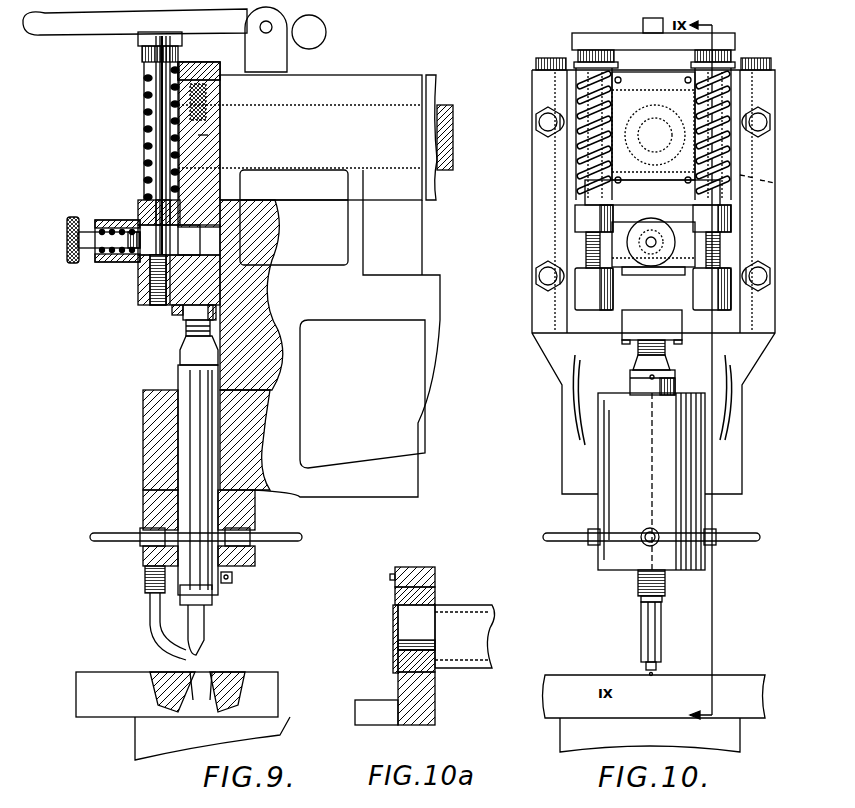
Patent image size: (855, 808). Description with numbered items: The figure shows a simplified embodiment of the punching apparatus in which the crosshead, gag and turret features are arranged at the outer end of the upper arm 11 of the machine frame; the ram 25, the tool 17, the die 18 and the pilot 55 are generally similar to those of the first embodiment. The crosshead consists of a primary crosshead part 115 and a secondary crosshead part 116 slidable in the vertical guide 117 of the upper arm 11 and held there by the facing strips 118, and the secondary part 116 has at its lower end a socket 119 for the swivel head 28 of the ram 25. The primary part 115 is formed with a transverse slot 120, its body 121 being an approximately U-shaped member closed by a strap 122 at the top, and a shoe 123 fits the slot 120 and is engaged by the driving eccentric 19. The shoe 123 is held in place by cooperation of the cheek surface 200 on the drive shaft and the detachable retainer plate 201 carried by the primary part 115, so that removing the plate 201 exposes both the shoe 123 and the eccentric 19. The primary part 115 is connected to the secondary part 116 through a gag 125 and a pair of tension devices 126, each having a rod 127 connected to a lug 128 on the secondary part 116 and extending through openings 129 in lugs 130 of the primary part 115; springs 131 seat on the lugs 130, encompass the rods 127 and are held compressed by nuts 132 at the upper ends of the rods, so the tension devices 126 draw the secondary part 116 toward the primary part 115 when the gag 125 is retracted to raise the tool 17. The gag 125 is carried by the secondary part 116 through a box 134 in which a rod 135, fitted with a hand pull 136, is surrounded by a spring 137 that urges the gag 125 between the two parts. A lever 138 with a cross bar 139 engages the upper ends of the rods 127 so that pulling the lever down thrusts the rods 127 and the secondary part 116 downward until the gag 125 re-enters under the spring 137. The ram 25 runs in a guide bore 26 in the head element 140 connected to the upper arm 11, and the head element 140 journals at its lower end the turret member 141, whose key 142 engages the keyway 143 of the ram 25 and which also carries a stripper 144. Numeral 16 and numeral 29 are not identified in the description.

In FIG. 9, the upper arm 11 is at (393, 296).
In FIG. 10, the upper arm 11 is at (743, 437).
In FIG. 9, the guide block 16 is at (443, 161).
In FIG. 9, the tool 17 is at (201, 630).
In FIG. 9, the die 18 is at (181, 672).
In FIG. 10A, the driving eccentric 19 is at (421, 630).
In FIG. 10, the driving eccentric 19 is at (651, 116).
In FIG. 9, the ram 25 is at (181, 373).
In FIG. 10, the ram 25 is at (676, 379).
In FIG. 9, the guide bore 26 is at (221, 400).
In FIG. 9, the swivel head 28 is at (221, 321).
In FIG. 9, the coupling 29 is at (187, 331).
In FIG. 9, the pilot 55 is at (206, 672).
In FIG. 9, the primary crosshead part 115 is at (216, 200).
In FIG. 10A, the primary crosshead part 115 is at (426, 716).
In FIG. 9, the secondary crosshead part 116 is at (241, 300).
In FIG. 9, the vertical guide 117 is at (216, 211).
In FIG. 10, the vertical guide 117 is at (761, 189).
In FIG. 10, the facing strips 118 is at (551, 166).
In FIG. 9, the socket 119 is at (184, 313).
In FIG. 10, the socket 119 is at (633, 327).
In FIG. 9, the transverse slot 120 is at (222, 129).
In FIG. 10A, the transverse slot 120 is at (401, 660).
In FIG. 10, the transverse slot 120 is at (631, 172).
In FIG. 9, the body 121 is at (211, 165).
In FIG. 10, the body 121 is at (652, 195).
In FIG. 9, the strap 122 is at (219, 66).
In FIG. 10A, the strap 122 is at (421, 576).
In FIG. 10, the strap 122 is at (673, 74).
In FIG. 9, the shoe 123 is at (211, 119).
In FIG. 10A, the shoe 123 is at (433, 600).
In FIG. 10, the shoe 123 is at (673, 91).
In FIG. 9, the gag 125 is at (200, 243).
In FIG. 9, the tension devices 126 is at (146, 119).
In FIG. 10, the tension devices 126 is at (581, 101).
In FIG. 9, the rod 127 is at (158, 146).
In FIG. 10, the rod 127 is at (591, 246).
In FIG. 9, the lug 128 is at (146, 296).
In FIG. 10, the lug 128 is at (586, 293).
In FIG. 9, the openings 129 is at (147, 210).
In FIG. 9, the lugs 130 is at (151, 210).
In FIG. 10, the lugs 130 is at (586, 219).
In FIG. 9, the springs 131 is at (148, 100).
In FIG. 10, the springs 131 is at (591, 186).
In FIG. 9, the nuts 132 is at (142, 56).
In FIG. 10, the nuts 132 is at (579, 58).
In FIG. 9, the box 134 is at (101, 263).
In FIG. 10, the box 134 is at (631, 271).
In FIG. 9, the rod 135 is at (91, 234).
In FIG. 9, the hand pull 136 is at (67, 246).
In FIG. 10, the hand pull 136 is at (649, 233).
In FIG. 9, the spring 137 is at (137, 259).
In FIG. 9, the lever 138 is at (92, 33).
In FIG. 10, the lever 138 is at (646, 27).
In FIG. 9, the cross bar 139 is at (142, 36).
In FIG. 10, the cross bar 139 is at (593, 38).
In FIG. 9, the head element 140 is at (146, 438).
In FIG. 10, the head element 140 is at (579, 461).
In FIG. 9, the turret member 141 is at (249, 551).
In FIG. 10, the turret member 141 is at (609, 557).
In FIG. 9, the key 142 is at (233, 581).
In FIG. 9, the keyway 143 is at (241, 513).
In FIG. 9, the stripper 144 is at (151, 625).
In FIG. 10, the stripper 144 is at (647, 633).
In FIG. 10A, the cheek surface 200 is at (439, 669).
In FIG. 10A, the retainer plate 201 is at (393, 665).